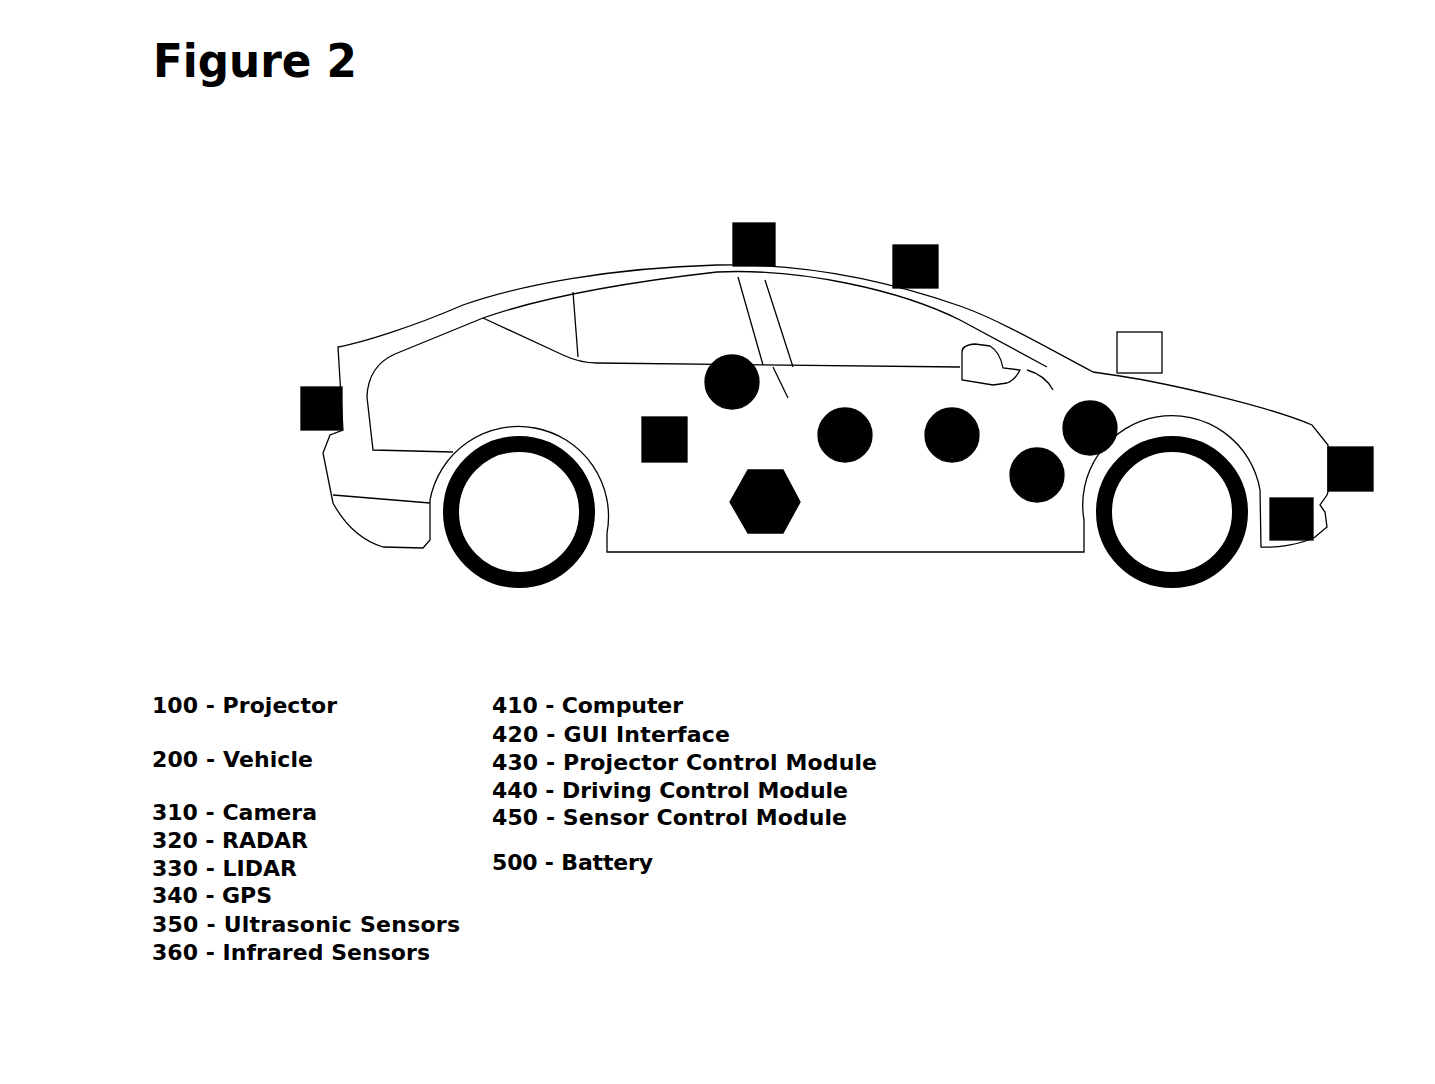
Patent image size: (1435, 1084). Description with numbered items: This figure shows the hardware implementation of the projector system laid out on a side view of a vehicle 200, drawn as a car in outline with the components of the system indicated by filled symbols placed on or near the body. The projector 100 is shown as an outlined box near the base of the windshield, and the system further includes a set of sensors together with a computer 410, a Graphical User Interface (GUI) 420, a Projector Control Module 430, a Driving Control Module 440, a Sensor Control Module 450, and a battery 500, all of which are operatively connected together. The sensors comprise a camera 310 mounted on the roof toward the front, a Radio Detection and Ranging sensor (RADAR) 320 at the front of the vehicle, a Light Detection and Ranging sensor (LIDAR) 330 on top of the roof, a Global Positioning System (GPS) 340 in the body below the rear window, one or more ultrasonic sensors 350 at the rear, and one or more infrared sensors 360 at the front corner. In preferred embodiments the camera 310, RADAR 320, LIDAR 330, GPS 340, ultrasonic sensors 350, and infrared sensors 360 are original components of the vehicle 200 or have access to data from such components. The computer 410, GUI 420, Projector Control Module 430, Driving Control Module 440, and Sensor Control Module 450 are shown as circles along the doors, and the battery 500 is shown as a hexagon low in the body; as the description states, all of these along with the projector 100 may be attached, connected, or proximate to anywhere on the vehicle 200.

The projector 100 is at (1139, 341).
The vehicle 200 is at (825, 403).
The camera 310 is at (915, 250).
The Radio Detection and Ranging sensor (RADAR) 320 is at (1356, 454).
The Light Detection and Ranging sensor (LIDAR) 330 is at (756, 226).
The Global Positioning System (GPS) 340 is at (663, 422).
The ultrasonic sensors 350 is at (317, 391).
The infrared sensors 360 is at (1289, 502).
The computer 410 is at (845, 422).
The Graphical User Interface (GUI) 420 is at (952, 422).
The Projector Control Module 430 is at (1090, 415).
The Driving Control Module 440 is at (1037, 462).
The Sensor Control Module 450 is at (732, 368).
The battery 500 is at (765, 484).